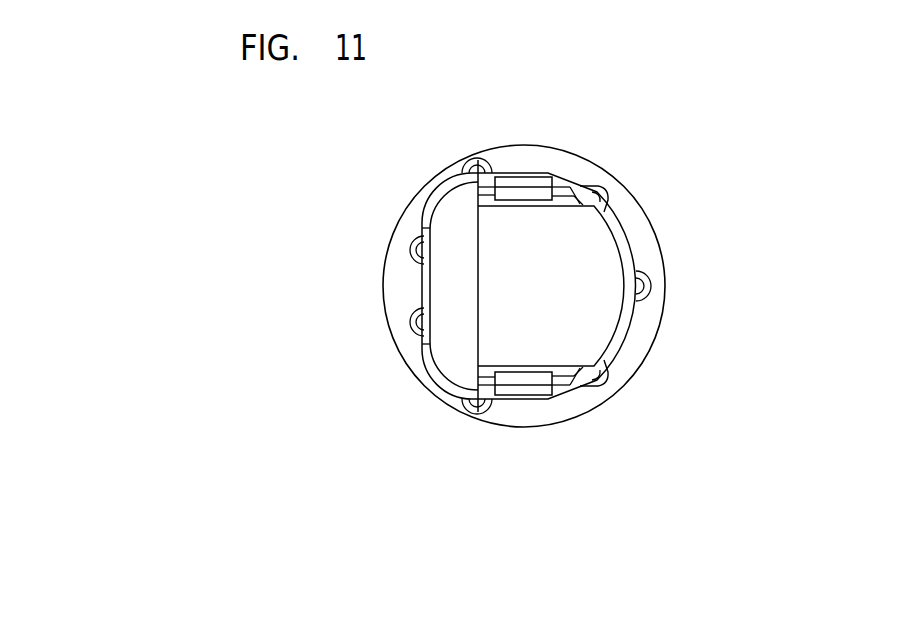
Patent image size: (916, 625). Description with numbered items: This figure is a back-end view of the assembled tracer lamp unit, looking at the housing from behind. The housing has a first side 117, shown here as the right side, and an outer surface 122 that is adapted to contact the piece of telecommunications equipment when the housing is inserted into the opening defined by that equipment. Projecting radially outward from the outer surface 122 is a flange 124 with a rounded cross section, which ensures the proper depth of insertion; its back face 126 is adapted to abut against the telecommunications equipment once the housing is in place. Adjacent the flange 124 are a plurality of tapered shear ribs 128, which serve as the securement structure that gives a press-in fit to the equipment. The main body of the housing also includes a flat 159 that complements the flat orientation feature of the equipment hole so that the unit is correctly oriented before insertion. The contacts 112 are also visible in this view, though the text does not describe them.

The electrical contact 112 is at (520, 195).
The first side 117 is at (737, 332).
The outer surface 122 is at (630, 242).
The flange 124 is at (522, 145).
The back face 126 is at (630, 355).
The shear ribs 128 is at (606, 188).
The flat 159 is at (422, 285).